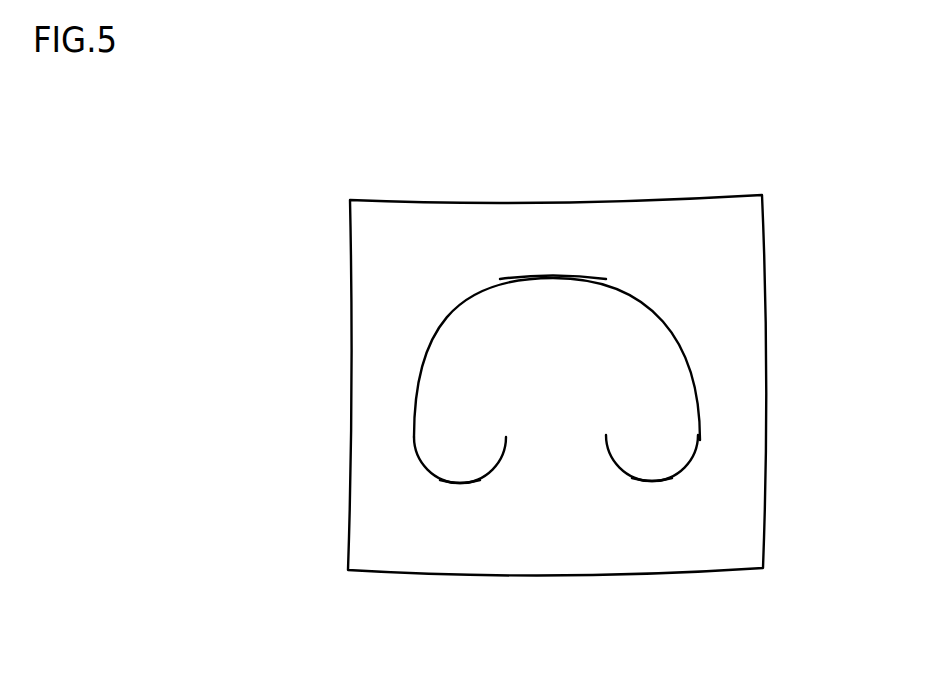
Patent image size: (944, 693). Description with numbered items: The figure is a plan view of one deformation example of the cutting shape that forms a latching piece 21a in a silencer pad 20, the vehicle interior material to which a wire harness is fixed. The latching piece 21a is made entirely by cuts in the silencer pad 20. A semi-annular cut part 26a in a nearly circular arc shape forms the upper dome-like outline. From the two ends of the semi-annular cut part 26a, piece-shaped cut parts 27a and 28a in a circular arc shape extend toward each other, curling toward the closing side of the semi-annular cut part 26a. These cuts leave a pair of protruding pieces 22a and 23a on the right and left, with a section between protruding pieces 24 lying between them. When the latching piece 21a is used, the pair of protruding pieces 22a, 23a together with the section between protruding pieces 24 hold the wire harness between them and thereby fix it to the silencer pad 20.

The silencer pad 20 is at (737, 245).
The latching piece 21a is at (618, 252).
The semi-annular cut part 26a is at (528, 280).
The protruding piece 23a is at (462, 458).
The protruding piece 22a is at (658, 450).
The piece-shaped cut part 28a is at (457, 482).
The section between protruding pieces 24 is at (553, 445).
The piece-shaped cut part 27a is at (653, 480).